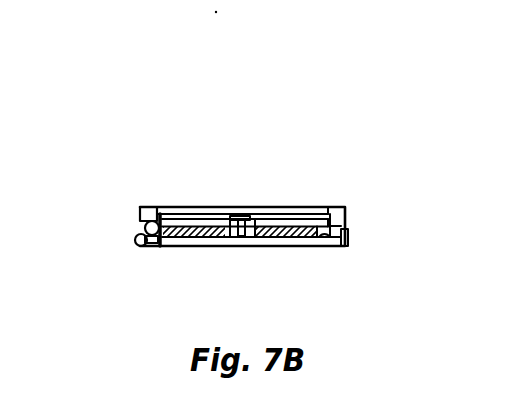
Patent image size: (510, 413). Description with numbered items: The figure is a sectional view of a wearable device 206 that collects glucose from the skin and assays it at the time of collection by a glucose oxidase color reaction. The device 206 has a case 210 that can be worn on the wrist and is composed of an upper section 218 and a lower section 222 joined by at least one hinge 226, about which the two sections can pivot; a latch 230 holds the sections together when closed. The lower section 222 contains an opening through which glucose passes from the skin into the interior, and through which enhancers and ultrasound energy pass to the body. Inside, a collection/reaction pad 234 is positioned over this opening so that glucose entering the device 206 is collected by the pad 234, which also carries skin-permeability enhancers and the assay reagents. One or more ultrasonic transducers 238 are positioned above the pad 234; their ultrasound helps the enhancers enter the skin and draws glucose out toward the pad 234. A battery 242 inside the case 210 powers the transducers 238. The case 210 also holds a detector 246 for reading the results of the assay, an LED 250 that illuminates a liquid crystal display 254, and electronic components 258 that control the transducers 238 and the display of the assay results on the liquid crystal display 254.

The device 206 is at (259, 151).
The case 210 is at (345, 207).
The upper section 218 is at (147, 206).
The lower section 222 is at (151, 248).
The hinge 226 is at (140, 243).
The latch 230 is at (347, 240).
The collection/reaction pad 234 is at (208, 247).
The ultrasonic transducers 238 is at (272, 222).
The battery 242 is at (146, 225).
The detector 246 is at (240, 237).
The LED 250 is at (252, 237).
The liquid crystal display 254 is at (285, 207).
The electronic components 258 is at (340, 226).